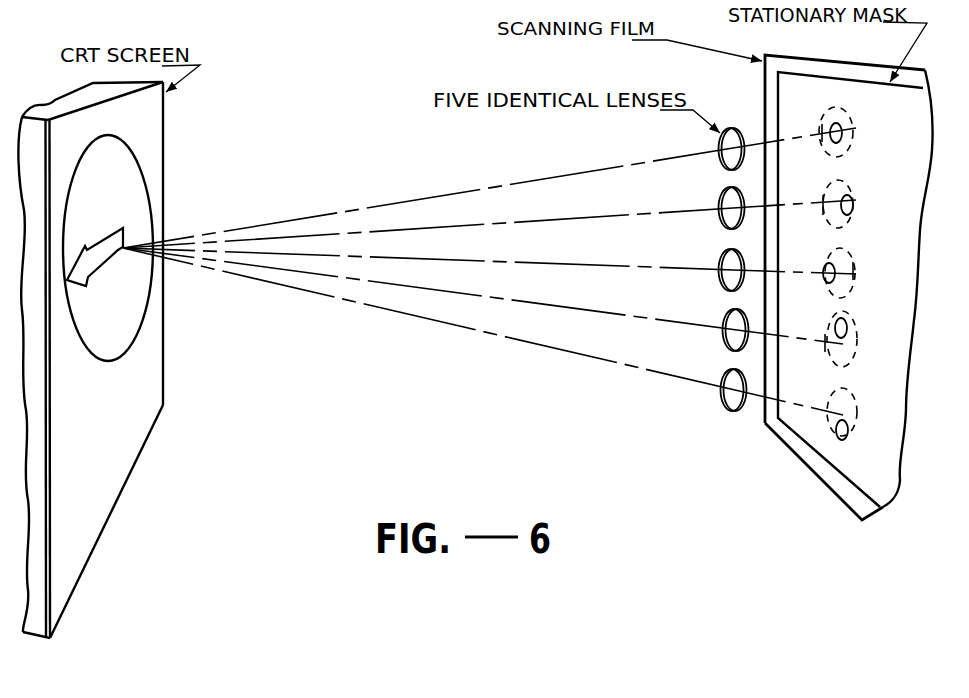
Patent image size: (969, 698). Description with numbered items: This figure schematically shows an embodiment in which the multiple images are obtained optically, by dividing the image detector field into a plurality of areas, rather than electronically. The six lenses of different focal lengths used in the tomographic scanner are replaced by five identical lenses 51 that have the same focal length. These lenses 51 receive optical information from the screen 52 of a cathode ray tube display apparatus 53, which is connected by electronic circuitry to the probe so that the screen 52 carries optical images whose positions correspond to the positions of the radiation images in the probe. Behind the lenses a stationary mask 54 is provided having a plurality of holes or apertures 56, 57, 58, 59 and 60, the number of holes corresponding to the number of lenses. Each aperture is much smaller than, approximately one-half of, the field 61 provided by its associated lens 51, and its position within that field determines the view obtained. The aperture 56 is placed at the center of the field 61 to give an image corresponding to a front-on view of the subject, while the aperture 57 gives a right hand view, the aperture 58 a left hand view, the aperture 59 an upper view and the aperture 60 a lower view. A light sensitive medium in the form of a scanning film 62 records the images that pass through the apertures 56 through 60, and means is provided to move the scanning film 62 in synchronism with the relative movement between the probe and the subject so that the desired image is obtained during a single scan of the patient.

The identical lens 51 is at (732, 402).
The screen 52 is at (132, 182).
The cathode ray tube display apparatus 53 is at (158, 392).
The stationary mask 54 is at (790, 95).
The aperture 56 is at (846, 133).
The aperture 57 is at (855, 205).
The aperture 58 is at (848, 270).
The aperture 59 is at (858, 334).
The aperture 60 is at (849, 427).
The field 61 is at (848, 110).
The scanning film 62 is at (815, 68).